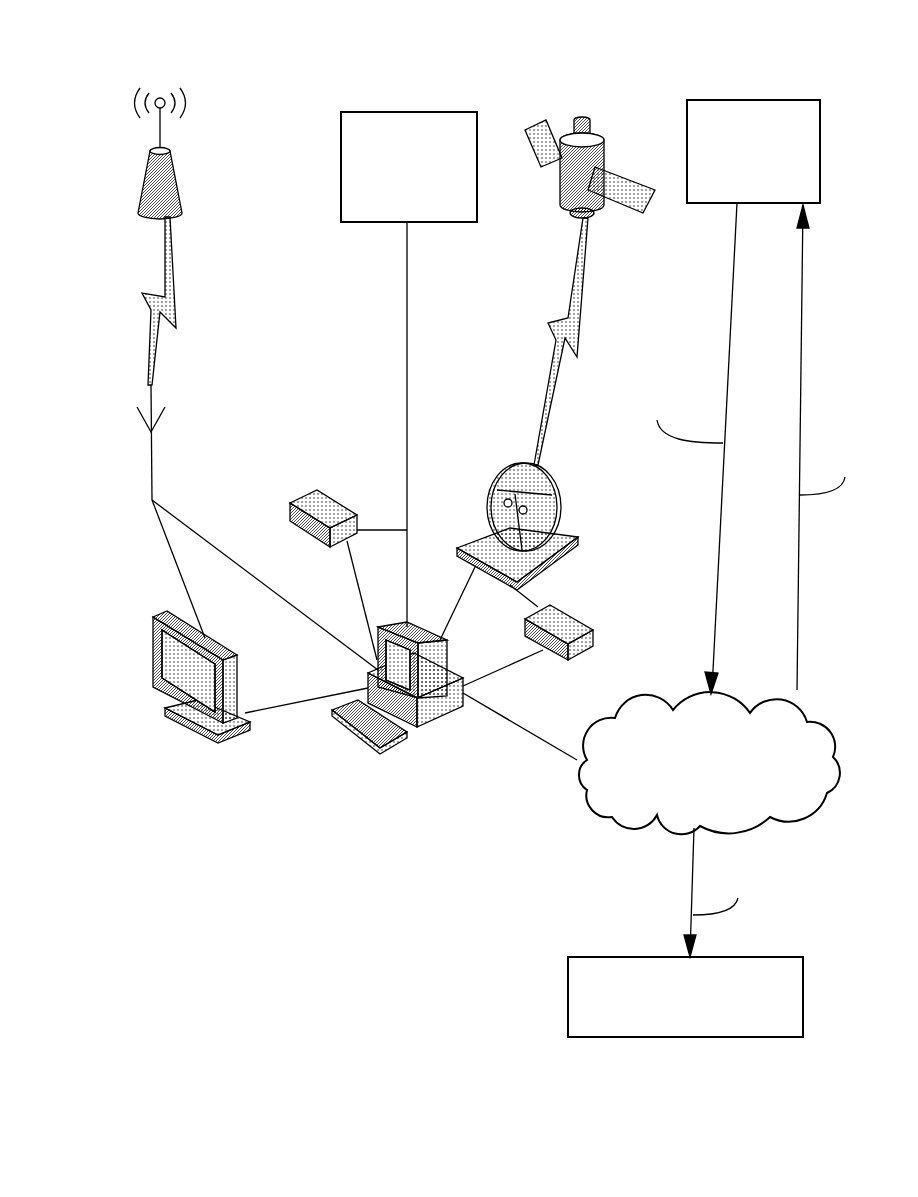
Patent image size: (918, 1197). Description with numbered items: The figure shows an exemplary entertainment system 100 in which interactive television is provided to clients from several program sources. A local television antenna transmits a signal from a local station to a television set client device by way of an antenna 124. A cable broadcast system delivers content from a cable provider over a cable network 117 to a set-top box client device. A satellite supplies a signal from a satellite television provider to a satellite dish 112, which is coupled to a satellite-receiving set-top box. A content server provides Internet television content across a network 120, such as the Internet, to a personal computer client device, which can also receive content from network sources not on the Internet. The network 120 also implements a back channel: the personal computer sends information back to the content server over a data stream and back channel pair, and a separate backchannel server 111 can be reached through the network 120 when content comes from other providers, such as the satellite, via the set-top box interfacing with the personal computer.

The system 100 is at (467, 523).
The cable network 117 is at (410, 378).
The antenna 124 is at (154, 470).
The satellite dish 112 is at (560, 537).
The network 120 is at (709, 763).
The backchannel server 111 is at (685, 997).